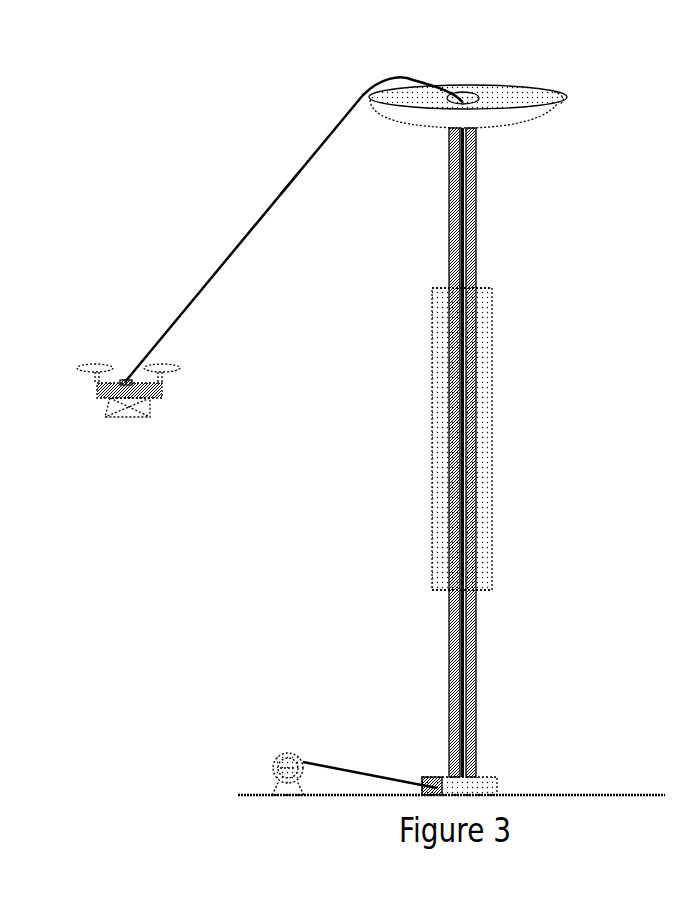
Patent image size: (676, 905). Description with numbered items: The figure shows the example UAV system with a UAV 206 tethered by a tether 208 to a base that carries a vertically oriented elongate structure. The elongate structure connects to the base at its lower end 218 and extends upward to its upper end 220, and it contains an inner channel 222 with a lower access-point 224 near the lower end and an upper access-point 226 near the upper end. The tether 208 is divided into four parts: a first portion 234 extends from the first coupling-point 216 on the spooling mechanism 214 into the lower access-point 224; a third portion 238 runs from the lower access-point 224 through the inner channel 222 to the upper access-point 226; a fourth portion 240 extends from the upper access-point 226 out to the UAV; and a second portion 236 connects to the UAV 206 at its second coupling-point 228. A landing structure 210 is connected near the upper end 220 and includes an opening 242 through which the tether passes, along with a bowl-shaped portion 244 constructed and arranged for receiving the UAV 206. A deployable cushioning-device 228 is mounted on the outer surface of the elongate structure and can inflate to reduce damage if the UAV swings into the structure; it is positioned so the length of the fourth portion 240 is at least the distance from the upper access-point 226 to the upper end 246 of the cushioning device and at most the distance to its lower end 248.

The UAV 206 is at (84, 406).
The tether 208 is at (263, 250).
The landing structure 210 is at (417, 143).
The spooling mechanism 214 is at (268, 778).
The first coupling-point 216 is at (291, 752).
The lower end 218 is at (505, 779).
The upper end 220 is at (493, 128).
The inner channel 222 is at (478, 702).
The lower access-point 224 is at (432, 775).
The upper access-point 226 is at (462, 96).
The deployable cushioning-device 228 is at (493, 432).
The first portion 234 is at (389, 754).
The second portion 236 is at (130, 362).
The third portion 238 is at (453, 244).
The fourth portion 240 is at (270, 182).
The opening 242 is at (470, 90).
The bowl-shaped portion 244 is at (548, 117).
The upper end of the deployable cushioning-device 246 is at (493, 289).
The lower end of the deployable cushioning-device 248 is at (493, 591).